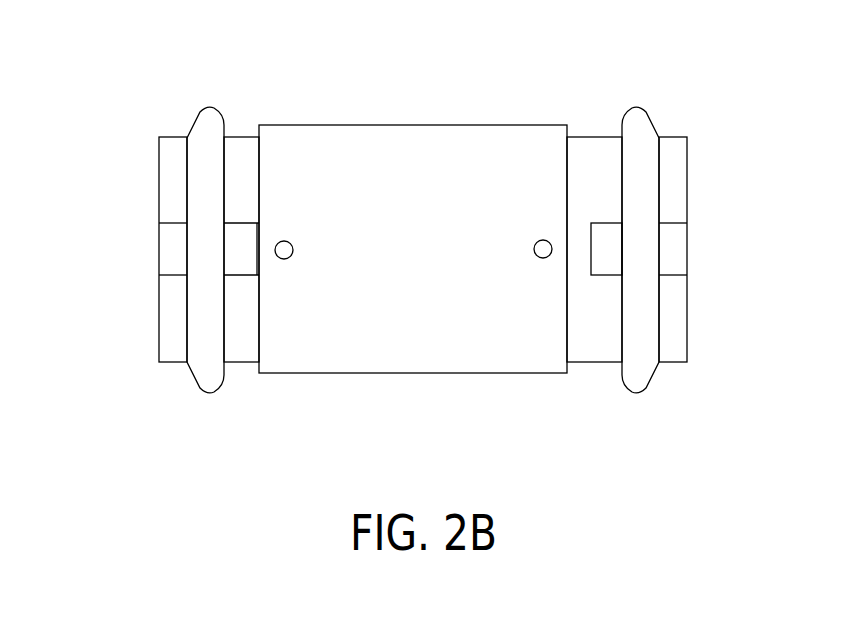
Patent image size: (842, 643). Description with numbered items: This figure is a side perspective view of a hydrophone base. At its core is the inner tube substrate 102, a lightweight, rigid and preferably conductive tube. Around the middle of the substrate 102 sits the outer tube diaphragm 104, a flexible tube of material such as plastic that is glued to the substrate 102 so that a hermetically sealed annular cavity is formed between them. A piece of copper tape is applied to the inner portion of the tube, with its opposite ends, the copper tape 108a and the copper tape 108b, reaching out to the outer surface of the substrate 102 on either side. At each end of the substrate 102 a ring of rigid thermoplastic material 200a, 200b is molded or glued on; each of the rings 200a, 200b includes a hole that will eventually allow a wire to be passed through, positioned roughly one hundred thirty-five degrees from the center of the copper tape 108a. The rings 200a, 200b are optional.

The inner tube substrate 102 is at (595, 340).
The outer tube diaphragm 104 is at (372, 150).
The copper tape 108a is at (159, 247).
The copper tape 108b is at (687, 248).
The ring of rigid thermoplastic material 200a is at (206, 107).
The ring of rigid thermoplastic material 200b is at (638, 107).